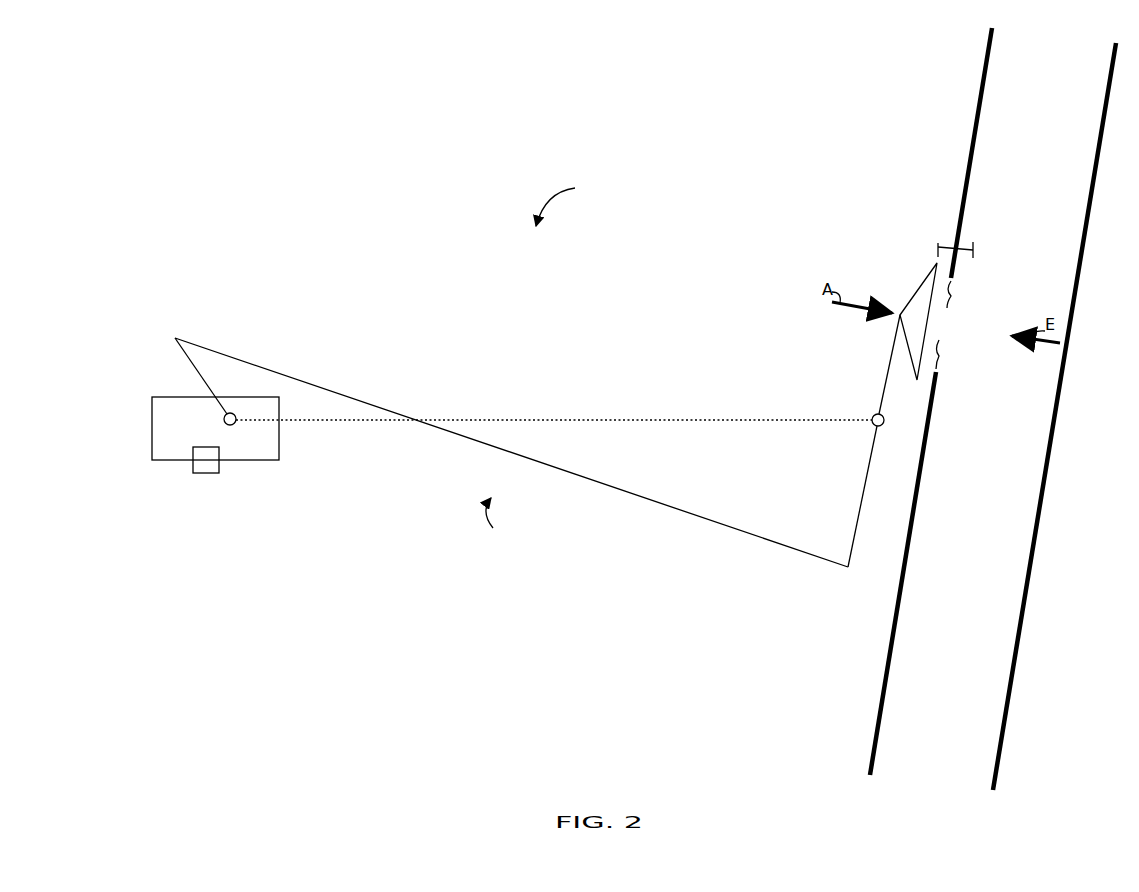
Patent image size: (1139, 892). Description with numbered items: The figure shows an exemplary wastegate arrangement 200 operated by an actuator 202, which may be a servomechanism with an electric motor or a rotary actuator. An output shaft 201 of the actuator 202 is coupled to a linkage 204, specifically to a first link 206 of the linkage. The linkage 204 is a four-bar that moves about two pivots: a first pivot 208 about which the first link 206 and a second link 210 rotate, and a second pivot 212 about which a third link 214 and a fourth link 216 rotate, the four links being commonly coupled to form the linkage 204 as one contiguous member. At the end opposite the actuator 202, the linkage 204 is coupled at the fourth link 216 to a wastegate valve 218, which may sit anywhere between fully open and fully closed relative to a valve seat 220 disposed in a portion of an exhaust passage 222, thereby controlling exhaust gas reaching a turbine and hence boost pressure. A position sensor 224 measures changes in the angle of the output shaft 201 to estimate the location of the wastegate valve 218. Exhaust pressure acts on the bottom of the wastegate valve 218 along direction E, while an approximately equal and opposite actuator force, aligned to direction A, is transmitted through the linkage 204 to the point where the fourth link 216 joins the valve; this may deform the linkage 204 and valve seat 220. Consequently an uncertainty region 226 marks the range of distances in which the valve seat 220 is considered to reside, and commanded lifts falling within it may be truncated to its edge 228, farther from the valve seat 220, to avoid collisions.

The wastegate arrangement 200 is at (572, 203).
The output shaft 201 is at (224, 419).
The actuator 202 is at (152, 397).
The linkage 204 is at (507, 518).
The first link 206 is at (175, 338).
The first pivot 208 is at (233, 424).
The second link 210 is at (318, 386).
The second pivot 212 is at (884, 424).
The third link 214 is at (857, 517).
The fourth link 216 is at (885, 395).
The wastegate valve 218 is at (915, 293).
The valve seat 220 is at (950, 325).
The exhaust passage 222 is at (987, 630).
The position sensor 224 is at (218, 473).
The uncertainty region 226 is at (967, 242).
The edge 228 is at (938, 243).